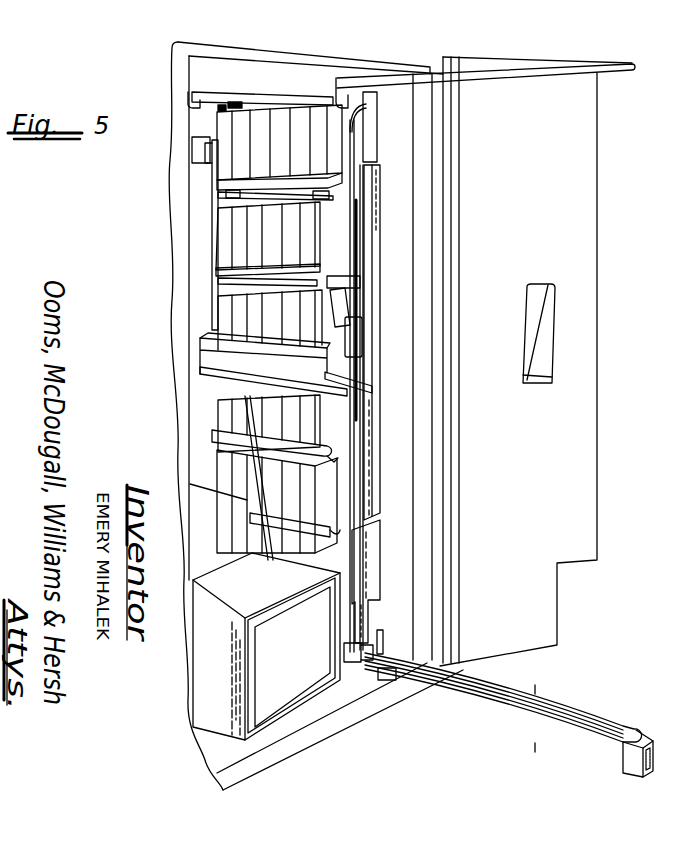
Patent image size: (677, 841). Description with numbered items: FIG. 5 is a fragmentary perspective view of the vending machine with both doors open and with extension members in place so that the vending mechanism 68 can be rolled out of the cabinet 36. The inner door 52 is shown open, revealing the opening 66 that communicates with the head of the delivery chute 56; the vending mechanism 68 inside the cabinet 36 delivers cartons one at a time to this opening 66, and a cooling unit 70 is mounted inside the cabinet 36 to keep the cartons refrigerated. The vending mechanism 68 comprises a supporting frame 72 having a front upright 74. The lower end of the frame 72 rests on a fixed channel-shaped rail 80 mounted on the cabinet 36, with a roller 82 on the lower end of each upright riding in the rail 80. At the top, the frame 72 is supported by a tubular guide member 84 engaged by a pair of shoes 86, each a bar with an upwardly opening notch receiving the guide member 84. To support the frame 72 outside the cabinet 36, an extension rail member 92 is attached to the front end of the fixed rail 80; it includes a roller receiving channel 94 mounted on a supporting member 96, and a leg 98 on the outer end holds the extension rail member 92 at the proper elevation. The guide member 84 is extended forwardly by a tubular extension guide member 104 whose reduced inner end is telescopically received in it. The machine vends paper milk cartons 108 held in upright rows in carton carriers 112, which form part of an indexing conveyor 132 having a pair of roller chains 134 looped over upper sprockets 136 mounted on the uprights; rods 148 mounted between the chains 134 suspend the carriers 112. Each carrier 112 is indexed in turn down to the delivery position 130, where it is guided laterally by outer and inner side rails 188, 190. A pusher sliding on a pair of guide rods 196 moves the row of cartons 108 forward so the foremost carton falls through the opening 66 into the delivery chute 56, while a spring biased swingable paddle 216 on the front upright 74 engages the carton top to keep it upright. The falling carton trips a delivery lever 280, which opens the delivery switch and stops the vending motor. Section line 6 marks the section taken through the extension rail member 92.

The cabinet 36 is at (313, 51).
The inner door 52 is at (589, 437).
The delivery chute 56 is at (531, 378).
The opening 66 is at (550, 339).
The vending mechanism 68 is at (411, 156).
The cooling unit 70 is at (282, 702).
The supporting frame 72 is at (372, 228).
The front upright 74 is at (371, 293).
The fixed channel-shaped rail 80 is at (351, 667).
The roller 82 is at (369, 644).
The guide member 84 is at (229, 92).
The shoe 86 is at (191, 90).
The extension rail member 92 is at (474, 702).
The roller receiving channel 94 is at (625, 727).
The supporting member 96 is at (426, 680).
The leg 98 is at (632, 757).
The extension guide member 104 is at (623, 62).
The carton 108 is at (272, 323).
The carton carrier 112 is at (220, 173).
The delivery position 130 is at (367, 344).
The indexing conveyor 132 is at (258, 104).
The roller chain 134 is at (358, 128).
The upper sprocket 136 is at (216, 111).
The rod 148 is at (295, 97).
The outer side rail 188 is at (209, 200).
The inner side rail 190 is at (243, 405).
The guide rod 196 is at (268, 354).
The spring biased swingable paddle 216 is at (355, 312).
The delivery lever 280 is at (356, 386).
The section line 6- 6 is at (532, 690).